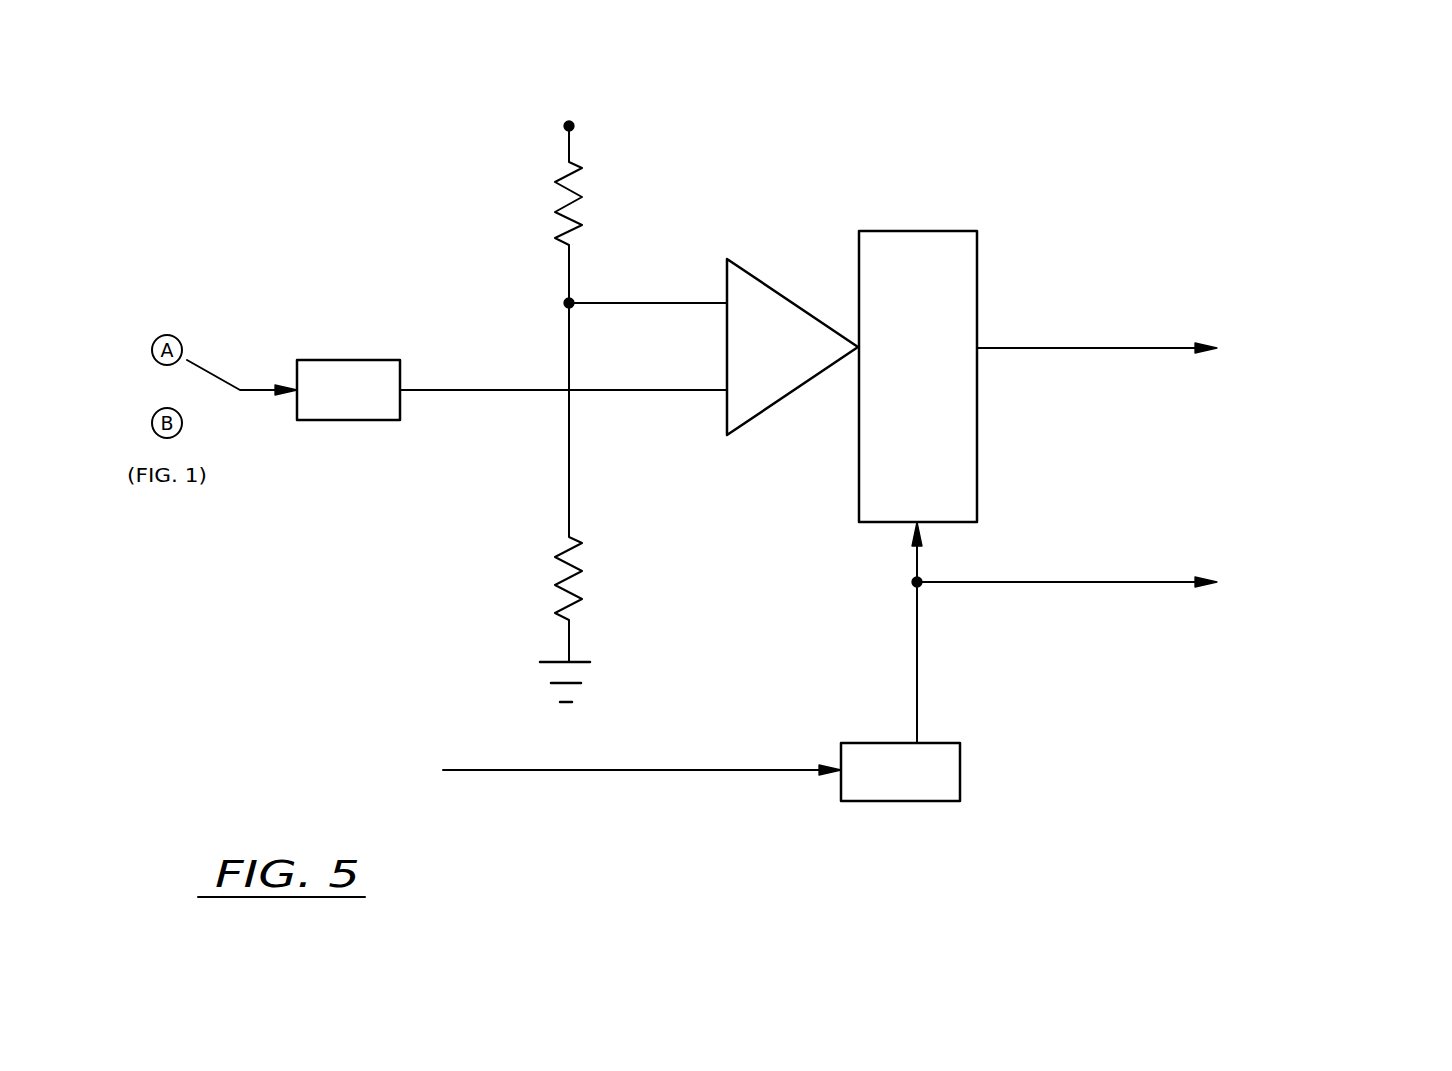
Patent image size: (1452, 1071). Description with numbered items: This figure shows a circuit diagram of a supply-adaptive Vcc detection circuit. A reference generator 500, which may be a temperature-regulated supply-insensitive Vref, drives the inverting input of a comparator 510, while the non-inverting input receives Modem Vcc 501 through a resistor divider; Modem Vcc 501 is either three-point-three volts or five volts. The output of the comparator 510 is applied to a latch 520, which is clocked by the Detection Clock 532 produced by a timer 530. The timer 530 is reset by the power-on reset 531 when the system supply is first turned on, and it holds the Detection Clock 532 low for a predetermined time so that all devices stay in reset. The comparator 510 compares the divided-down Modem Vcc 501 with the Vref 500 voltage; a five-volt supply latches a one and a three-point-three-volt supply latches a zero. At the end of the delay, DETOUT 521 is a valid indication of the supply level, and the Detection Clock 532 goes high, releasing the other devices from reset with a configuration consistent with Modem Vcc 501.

The reference generator 500 is at (357, 360).
The Modem Vcc 501 is at (578, 68).
The comparator 510 is at (793, 330).
The latch 520 is at (937, 292).
The DETOUT 521 is at (1230, 343).
The timer 530 is at (960, 770).
The power-on reset 531 is at (327, 730).
The Detection Clock 532 is at (917, 617).